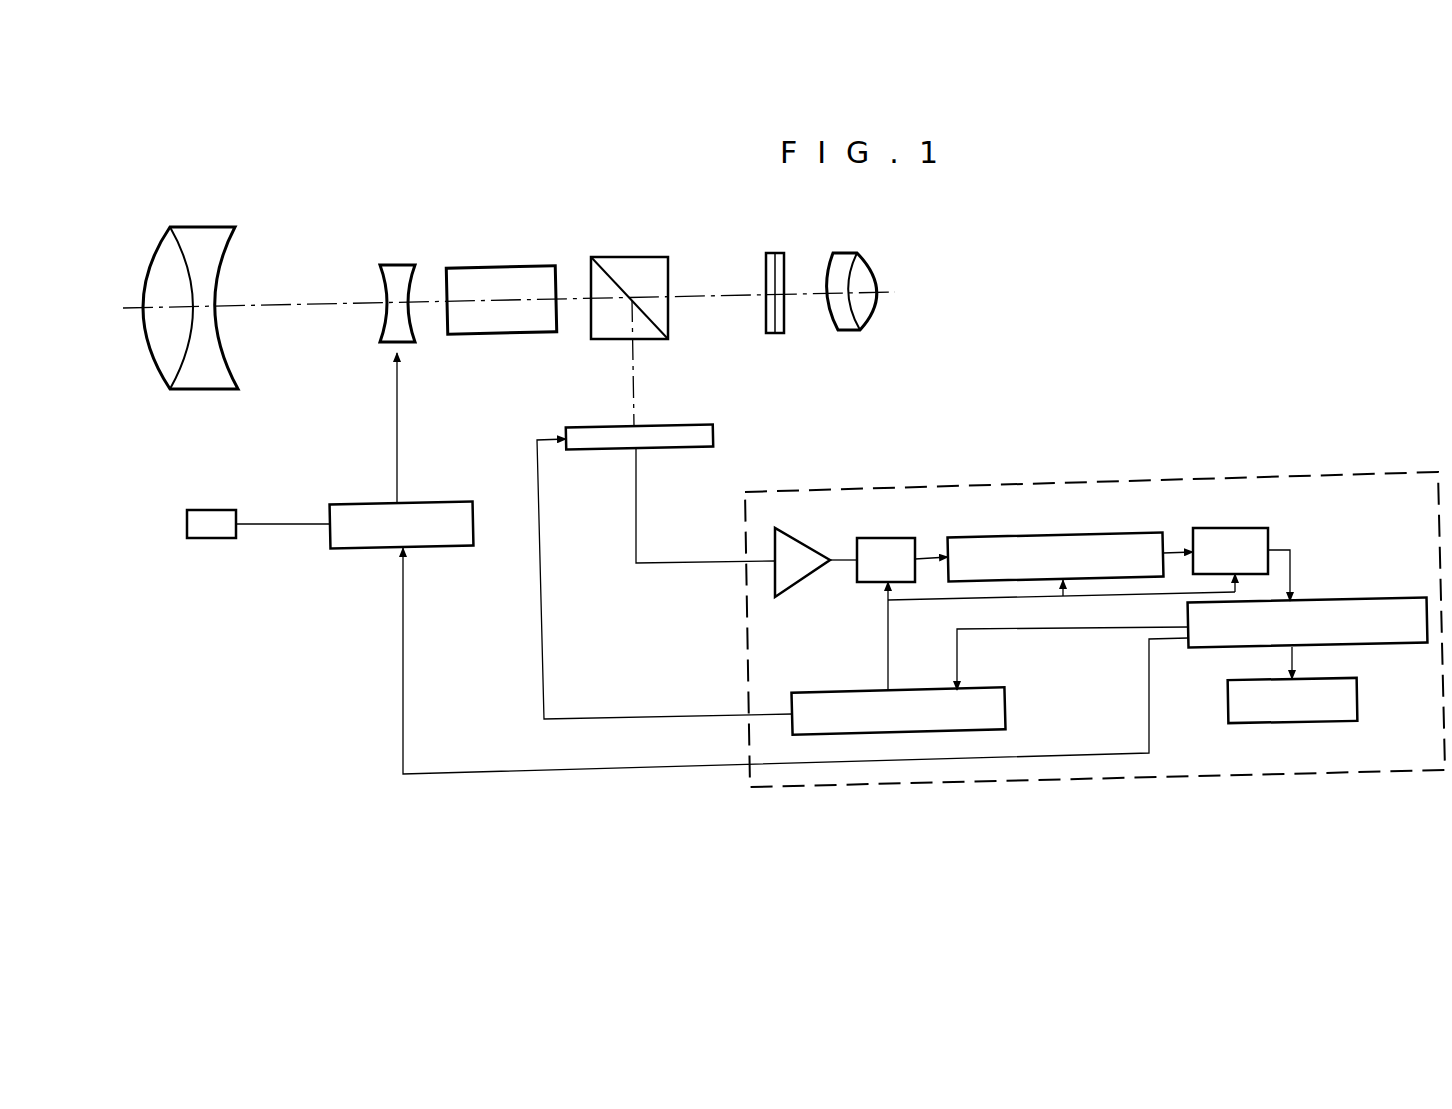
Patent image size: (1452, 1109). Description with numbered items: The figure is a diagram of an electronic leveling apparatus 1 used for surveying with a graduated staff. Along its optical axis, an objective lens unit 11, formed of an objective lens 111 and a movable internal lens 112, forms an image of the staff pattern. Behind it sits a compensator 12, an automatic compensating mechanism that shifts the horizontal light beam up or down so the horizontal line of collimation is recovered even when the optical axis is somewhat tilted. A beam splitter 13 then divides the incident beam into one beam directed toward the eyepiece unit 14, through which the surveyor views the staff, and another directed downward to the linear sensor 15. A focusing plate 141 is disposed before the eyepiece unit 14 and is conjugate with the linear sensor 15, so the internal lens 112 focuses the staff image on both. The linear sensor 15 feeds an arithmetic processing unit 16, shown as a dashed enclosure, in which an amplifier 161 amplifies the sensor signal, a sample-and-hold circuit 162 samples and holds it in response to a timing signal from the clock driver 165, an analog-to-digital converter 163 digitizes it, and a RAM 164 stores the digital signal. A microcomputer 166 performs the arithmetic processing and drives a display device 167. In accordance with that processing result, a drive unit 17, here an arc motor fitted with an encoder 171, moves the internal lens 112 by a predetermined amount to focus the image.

The electronic leveling apparatus 1 is at (628, 780).
The objective lens unit 11 is at (192, 207).
The objective lens 111 is at (218, 380).
The internal lens 112 is at (397, 265).
The compensator 12 is at (497, 267).
The beam splitter 13 is at (637, 257).
The eyepiece unit 14 is at (876, 262).
The focusing plate 141 is at (770, 253).
The linear sensor 15 is at (697, 426).
The arithmetic processing unit 16 is at (1195, 488).
The amplifier 161 is at (815, 548).
The sample-and-hold circuit 162 is at (907, 537).
The analog-to-digital converter 163 is at (1050, 534).
The RAM 164 is at (1233, 528).
The clock driver 165 is at (1007, 708).
The microcomputer 166 is at (1337, 597).
The display device 167 is at (1247, 722).
The drive unit 17 is at (447, 502).
The encoder 171 is at (193, 510).